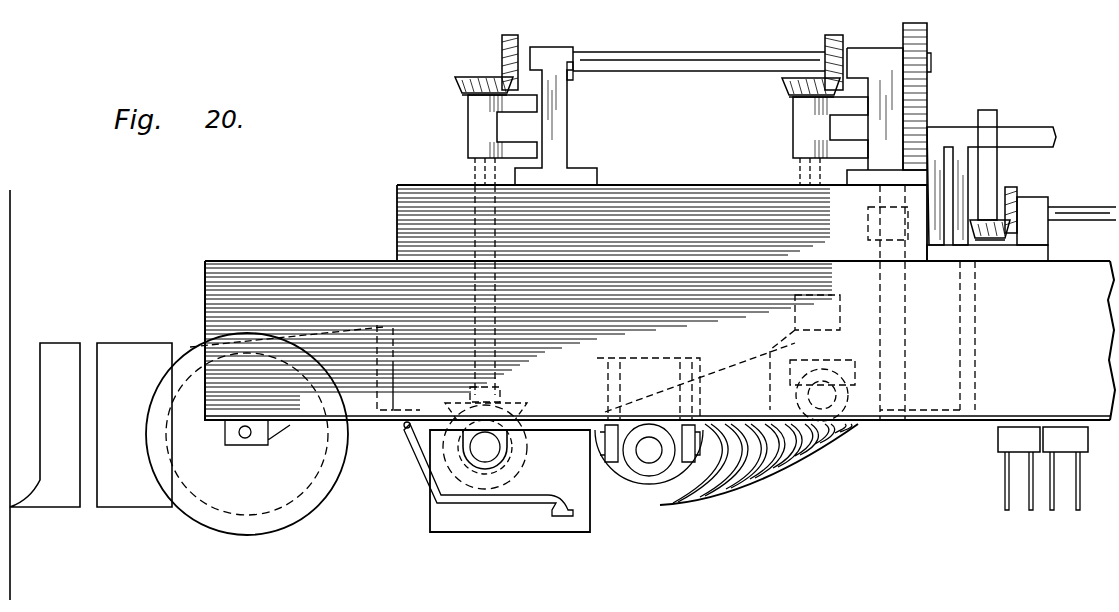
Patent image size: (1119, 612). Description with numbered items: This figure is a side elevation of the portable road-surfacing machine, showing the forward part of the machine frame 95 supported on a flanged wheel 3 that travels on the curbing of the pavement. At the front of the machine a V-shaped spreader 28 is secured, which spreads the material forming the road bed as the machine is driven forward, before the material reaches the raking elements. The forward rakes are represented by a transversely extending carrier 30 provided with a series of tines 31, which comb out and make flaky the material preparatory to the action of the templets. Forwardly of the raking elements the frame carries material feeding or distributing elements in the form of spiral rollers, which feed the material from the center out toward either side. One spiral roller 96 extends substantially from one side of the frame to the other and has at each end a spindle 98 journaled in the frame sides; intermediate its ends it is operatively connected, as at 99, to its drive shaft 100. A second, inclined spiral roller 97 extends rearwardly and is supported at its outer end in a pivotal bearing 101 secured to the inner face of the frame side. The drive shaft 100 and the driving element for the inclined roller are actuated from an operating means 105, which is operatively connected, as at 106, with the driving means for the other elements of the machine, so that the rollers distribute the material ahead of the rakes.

The flanged wheel 3 is at (253, 523).
The spreader 28 is at (127, 500).
The carrier 30 is at (1060, 435).
The tines 31 is at (1006, 493).
The machine frame 95 is at (1052, 366).
The spiral roller 96 is at (428, 443).
The spiral roller 97 is at (777, 467).
The spindle 98 is at (490, 440).
The operative connection 99 is at (455, 402).
The drive shaft 100 is at (666, 60).
The pivotal bearing 101 is at (652, 475).
The operating means 105 is at (846, 46).
The operative connection 106 is at (1020, 203).